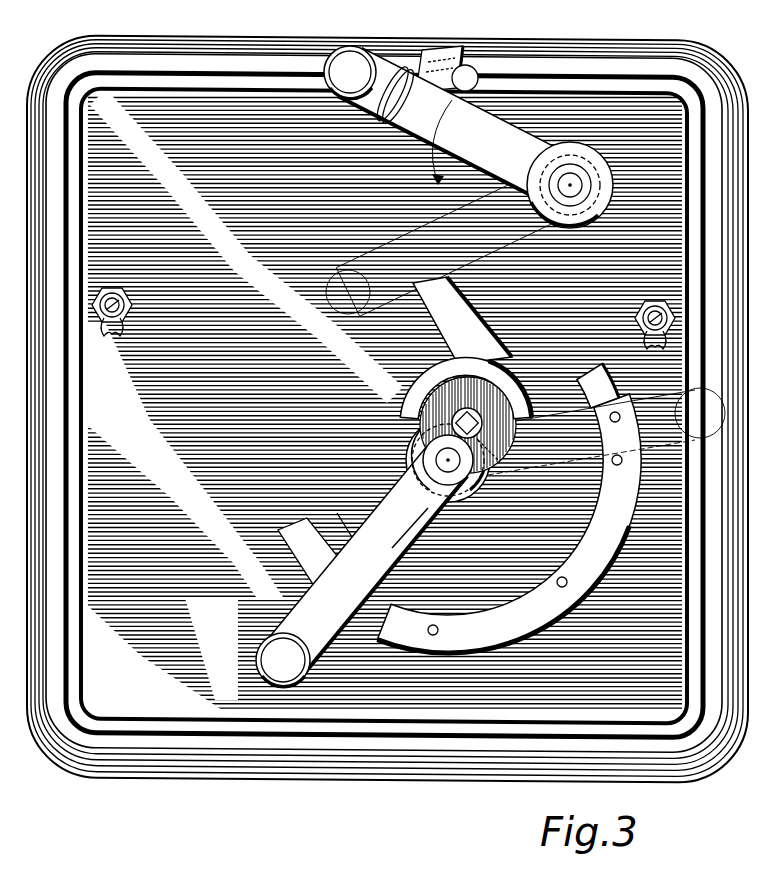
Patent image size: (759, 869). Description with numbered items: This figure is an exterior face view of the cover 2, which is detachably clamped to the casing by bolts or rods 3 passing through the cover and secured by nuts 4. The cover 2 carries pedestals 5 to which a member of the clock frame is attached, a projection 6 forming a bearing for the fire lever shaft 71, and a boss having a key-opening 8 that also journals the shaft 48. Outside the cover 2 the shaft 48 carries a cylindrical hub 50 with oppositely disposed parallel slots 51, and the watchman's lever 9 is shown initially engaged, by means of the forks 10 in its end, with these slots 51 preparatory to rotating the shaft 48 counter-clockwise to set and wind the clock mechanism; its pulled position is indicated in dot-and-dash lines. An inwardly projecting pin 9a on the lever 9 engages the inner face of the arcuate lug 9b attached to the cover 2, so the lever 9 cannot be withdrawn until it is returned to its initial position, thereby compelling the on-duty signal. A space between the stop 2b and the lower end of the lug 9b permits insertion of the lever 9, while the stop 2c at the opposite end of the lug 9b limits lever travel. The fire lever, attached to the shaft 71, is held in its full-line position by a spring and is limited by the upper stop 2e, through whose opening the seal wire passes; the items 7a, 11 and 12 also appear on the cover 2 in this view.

The cover 2 is at (580, 52).
The stop 2b is at (298, 562).
The stop 2c is at (582, 379).
The upper stop 2e is at (446, 51).
The bolts or rods 3 is at (126, 300).
The nuts 4 is at (122, 318).
The pedestals 5 is at (484, 424).
The projection 6 is at (470, 410).
The arm of fire lever 7a is at (448, 305).
The key-opening 8 is at (476, 418).
The watchman's lever 9 is at (487, 526).
The inwardly projecting pin 9a is at (410, 572).
The arcuate lug 9b is at (496, 603).
The forks 10 is at (500, 462).
The fire lever in lowered position 11 is at (396, 242).
The fire lever 12 is at (530, 135).
The shaft 48 is at (432, 452).
The cylindrical hub 50 is at (436, 462).
The parallel slots 51 is at (420, 438).
The shaft 71 is at (580, 175).